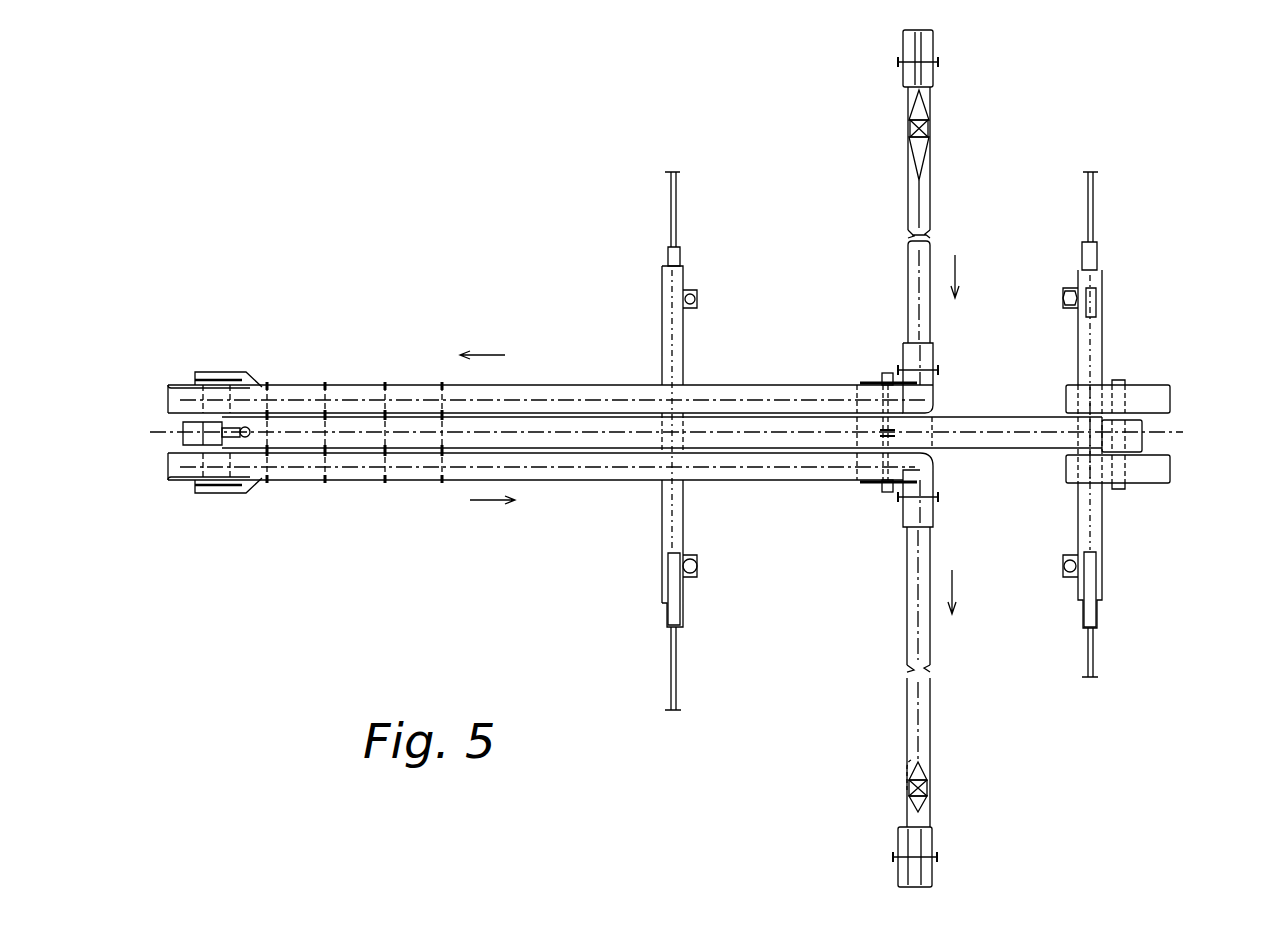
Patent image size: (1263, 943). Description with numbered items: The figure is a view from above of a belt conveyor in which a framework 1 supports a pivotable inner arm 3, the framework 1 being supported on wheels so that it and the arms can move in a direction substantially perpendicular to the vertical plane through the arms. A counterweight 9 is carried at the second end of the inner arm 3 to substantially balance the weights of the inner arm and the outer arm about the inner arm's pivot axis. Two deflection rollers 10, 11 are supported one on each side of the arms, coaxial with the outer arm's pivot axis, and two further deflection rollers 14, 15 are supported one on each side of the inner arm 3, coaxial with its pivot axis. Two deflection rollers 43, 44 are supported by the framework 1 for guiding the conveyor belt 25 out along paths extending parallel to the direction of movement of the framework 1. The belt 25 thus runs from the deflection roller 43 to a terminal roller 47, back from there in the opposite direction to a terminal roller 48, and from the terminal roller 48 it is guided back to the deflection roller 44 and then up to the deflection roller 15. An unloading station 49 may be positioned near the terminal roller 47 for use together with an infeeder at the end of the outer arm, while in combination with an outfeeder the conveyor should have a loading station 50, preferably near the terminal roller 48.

The framework 1 is at (652, 531).
The inner arm 3 is at (495, 432).
The counterweight 9 is at (1160, 475).
The deflection roller 10 is at (172, 484).
The deflection roller 11 is at (180, 385).
The deflection roller 14 is at (862, 484).
The deflection roller 15 is at (862, 382).
The conveyor belt 25 is at (374, 386).
The deflection roller 43 is at (934, 518).
The deflection roller 44 is at (934, 356).
The terminal roller 47 is at (932, 877).
The terminal roller 48 is at (934, 38).
The unloading station 49 is at (947, 798).
The loading station 50 is at (948, 133).